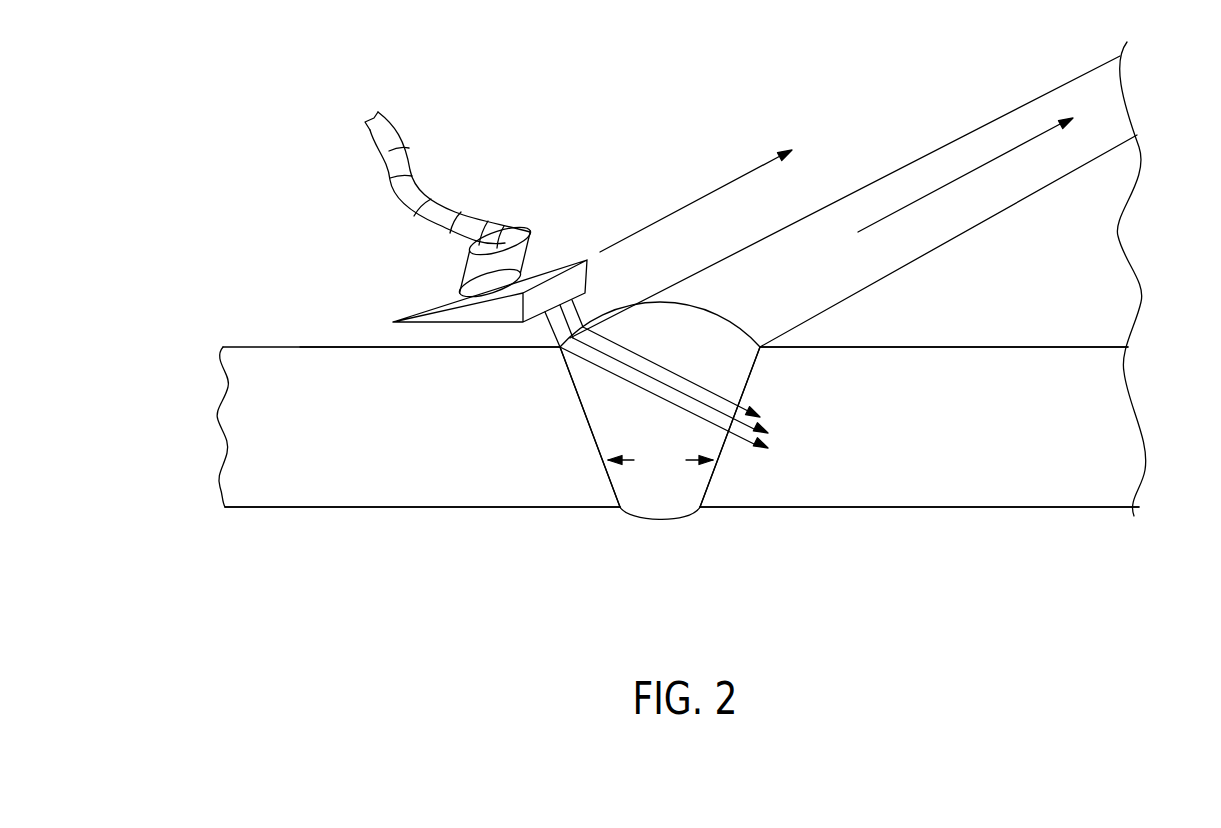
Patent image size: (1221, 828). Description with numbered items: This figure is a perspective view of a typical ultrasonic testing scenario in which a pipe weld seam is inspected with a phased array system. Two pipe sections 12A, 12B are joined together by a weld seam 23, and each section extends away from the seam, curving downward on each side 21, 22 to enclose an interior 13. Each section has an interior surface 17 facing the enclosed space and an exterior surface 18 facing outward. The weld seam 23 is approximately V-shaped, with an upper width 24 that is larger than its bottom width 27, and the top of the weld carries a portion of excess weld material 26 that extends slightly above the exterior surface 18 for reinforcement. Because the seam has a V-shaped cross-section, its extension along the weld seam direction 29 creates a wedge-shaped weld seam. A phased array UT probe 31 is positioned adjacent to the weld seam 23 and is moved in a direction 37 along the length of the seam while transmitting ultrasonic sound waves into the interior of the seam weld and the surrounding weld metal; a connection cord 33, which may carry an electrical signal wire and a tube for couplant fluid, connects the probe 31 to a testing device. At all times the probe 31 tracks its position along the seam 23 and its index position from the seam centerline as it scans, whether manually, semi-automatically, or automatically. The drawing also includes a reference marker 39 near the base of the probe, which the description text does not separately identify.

The pipe section 12A is at (385, 427).
The pipe section 12B is at (957, 279).
The interior 13 is at (660, 472).
The interior surface 17 is at (408, 508).
The exterior surface 18 is at (1017, 347).
The side 21 is at (218, 420).
The side 22 is at (1147, 481).
The weld seam 23 is at (878, 302).
The upper width 24 is at (660, 460).
The excess weld material 26 is at (645, 341).
The bottom width 27 is at (643, 524).
The weld seam direction 29 is at (940, 187).
The phased array UT probe 31 is at (543, 195).
The connection cord 33 is at (400, 120).
The direction 37 is at (723, 187).
The laser beam 39 is at (553, 375).